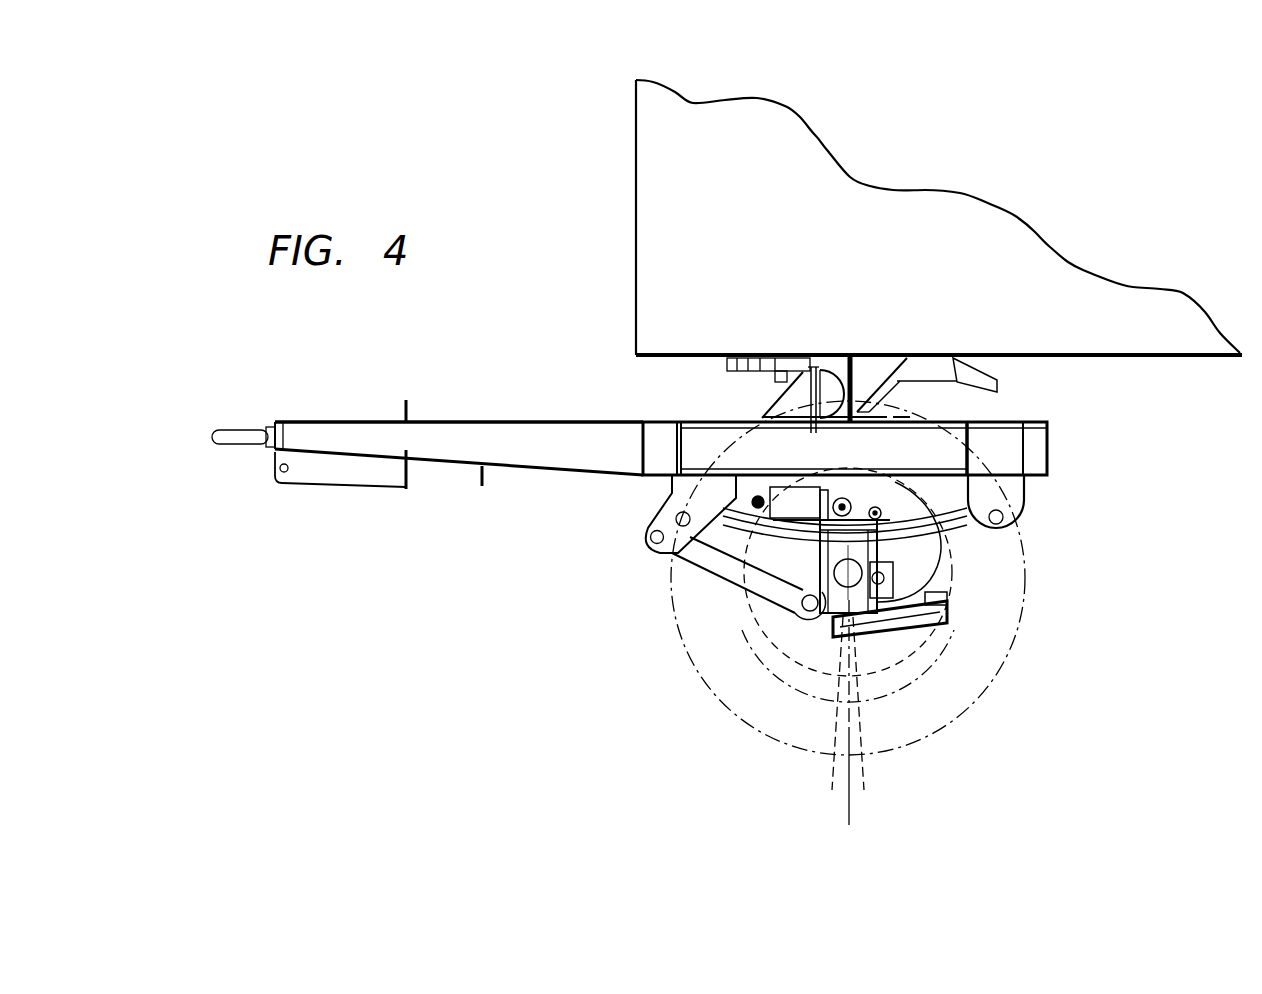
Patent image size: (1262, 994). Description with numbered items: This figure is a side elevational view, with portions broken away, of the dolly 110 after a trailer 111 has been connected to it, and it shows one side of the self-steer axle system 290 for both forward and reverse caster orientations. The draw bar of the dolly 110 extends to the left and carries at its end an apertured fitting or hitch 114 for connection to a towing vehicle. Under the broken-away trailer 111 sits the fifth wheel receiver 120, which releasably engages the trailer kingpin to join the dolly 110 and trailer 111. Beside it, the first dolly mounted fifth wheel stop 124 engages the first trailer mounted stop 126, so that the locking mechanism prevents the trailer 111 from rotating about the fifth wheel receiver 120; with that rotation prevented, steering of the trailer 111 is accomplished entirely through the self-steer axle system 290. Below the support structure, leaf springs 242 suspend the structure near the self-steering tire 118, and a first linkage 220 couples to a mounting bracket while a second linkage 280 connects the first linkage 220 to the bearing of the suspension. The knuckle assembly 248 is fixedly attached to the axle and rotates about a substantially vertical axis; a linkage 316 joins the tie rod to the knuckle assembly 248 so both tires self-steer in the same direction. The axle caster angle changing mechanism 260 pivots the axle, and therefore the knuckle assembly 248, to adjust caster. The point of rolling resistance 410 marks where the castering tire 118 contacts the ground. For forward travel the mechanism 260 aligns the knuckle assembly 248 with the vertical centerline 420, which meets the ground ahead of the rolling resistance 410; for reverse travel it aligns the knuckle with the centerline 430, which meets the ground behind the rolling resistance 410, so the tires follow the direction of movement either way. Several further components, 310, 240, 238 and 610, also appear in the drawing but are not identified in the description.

The trailer 111 is at (937, 112).
The transom 310 is at (636, 120).
The first dolly mounted fifth wheel stop 124 is at (822, 368).
The first trailer mounted stop 126 is at (872, 372).
The fifth wheel receiver 120 is at (1000, 387).
The apertured fitting or hitch 114 is at (238, 428).
The dolly 110 is at (437, 512).
The hanger bracket 240 is at (1026, 490).
The first self-steering tire 118 is at (732, 707).
The self-steer axle system 290 is at (1033, 628).
The pivot plate 238 is at (648, 540).
The first linkage 220 is at (735, 585).
The leaf springs 242 is at (918, 522).
The axle caster angle changing mechanism 260 is at (797, 510).
The knuckle assembly 248 is at (948, 557).
The second linkage 280 is at (773, 623).
The linkage 316 is at (949, 598).
The transducer bar 610 is at (822, 633).
The vertical centerline (forward caster) 420 is at (832, 787).
The centerline (reverse caster) 430 is at (868, 787).
The point of rolling resistance 410 is at (849, 835).